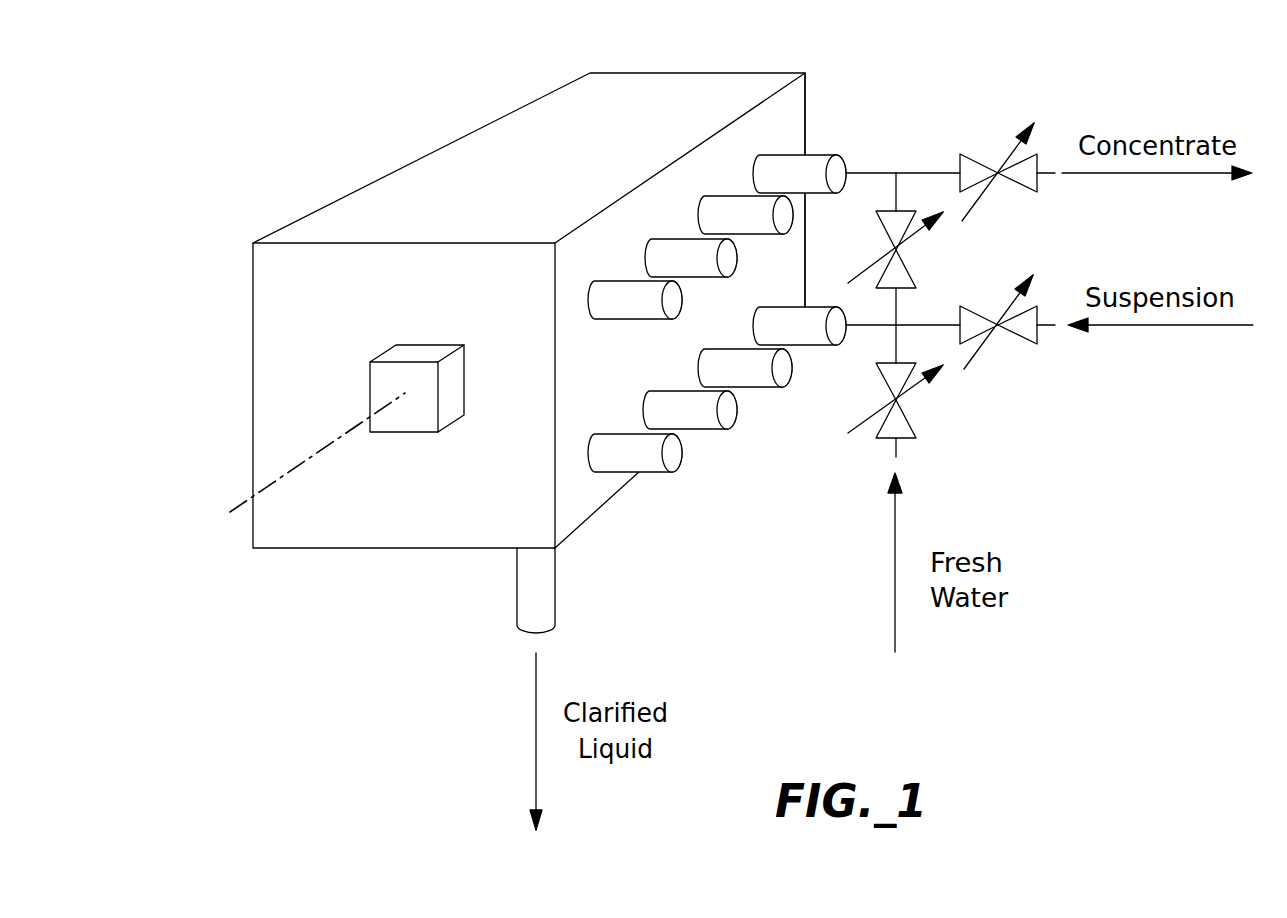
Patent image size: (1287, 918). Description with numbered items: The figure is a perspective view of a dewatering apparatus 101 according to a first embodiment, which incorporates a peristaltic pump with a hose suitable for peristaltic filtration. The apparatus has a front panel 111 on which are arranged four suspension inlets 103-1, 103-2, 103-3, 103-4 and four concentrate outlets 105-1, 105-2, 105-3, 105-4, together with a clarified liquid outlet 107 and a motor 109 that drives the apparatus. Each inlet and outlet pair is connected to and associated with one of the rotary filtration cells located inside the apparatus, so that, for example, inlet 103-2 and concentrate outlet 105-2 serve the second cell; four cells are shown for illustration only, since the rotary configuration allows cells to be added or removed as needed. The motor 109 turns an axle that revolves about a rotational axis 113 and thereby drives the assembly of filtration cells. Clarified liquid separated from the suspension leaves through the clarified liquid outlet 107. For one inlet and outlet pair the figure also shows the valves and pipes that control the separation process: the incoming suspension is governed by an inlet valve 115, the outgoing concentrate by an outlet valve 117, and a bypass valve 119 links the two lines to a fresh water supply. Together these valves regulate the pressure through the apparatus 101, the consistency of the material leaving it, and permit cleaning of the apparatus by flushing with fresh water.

The dewatering apparatus 101 is at (310, 92).
The suspension inlet 103-1 is at (640, 473).
The suspension inlet 103-2 is at (697, 430).
The suspension inlet 103-3 is at (752, 390).
The suspension inlet 103-4 is at (771, 306).
The concentrate outlet 105-1 is at (612, 280).
The concentrate outlet 105-2 is at (662, 238).
The concentrate outlet 105-3 is at (723, 195).
The concentrate outlet 105-4 is at (777, 153).
The clarified liquid outlet 107 is at (557, 600).
The motor 109 is at (370, 397).
The front panel 111 is at (805, 110).
The rotational axis 113 is at (312, 455).
The inlet valve 115 is at (998, 328).
The outlet valve 117 is at (998, 173).
The bypass valve 119 is at (900, 249).